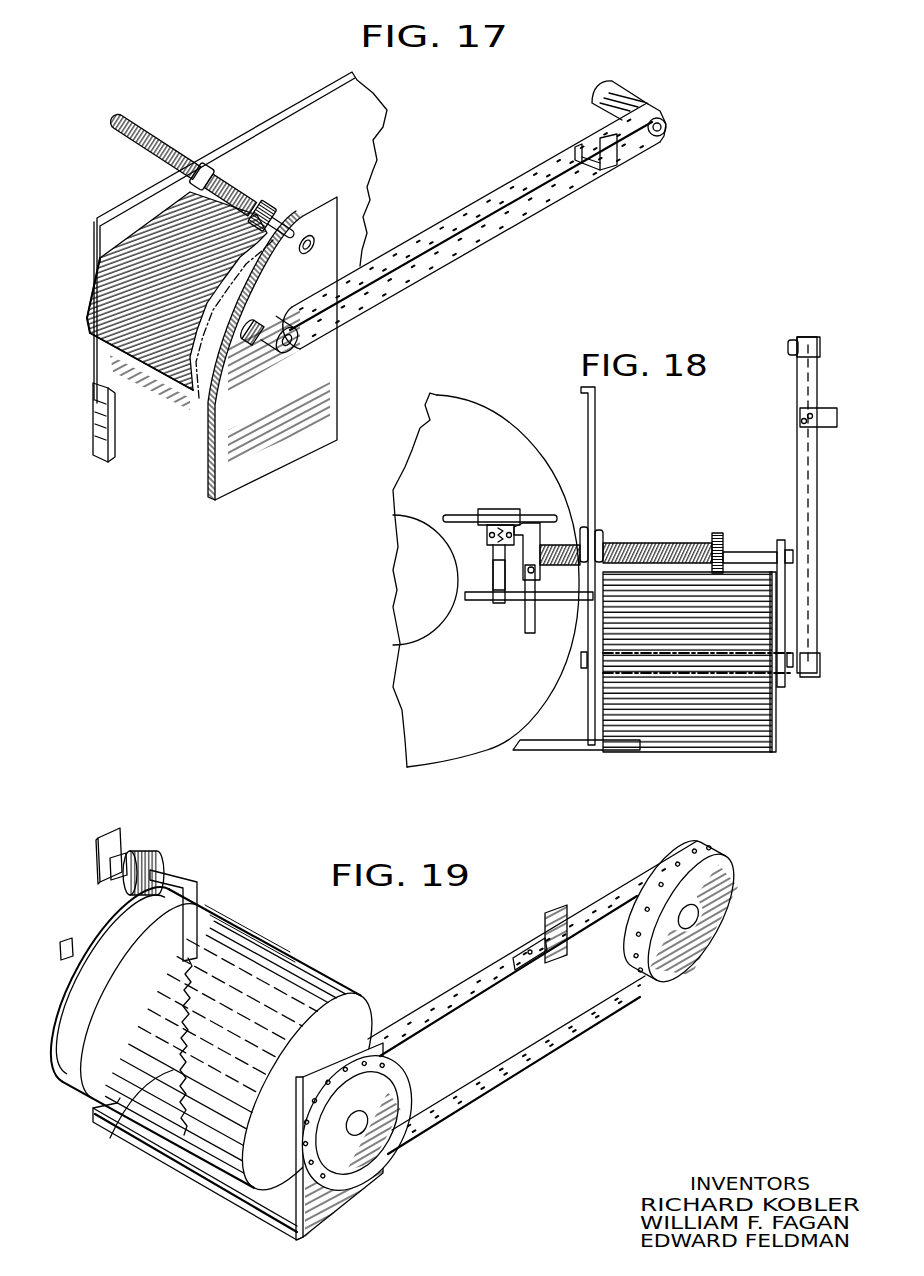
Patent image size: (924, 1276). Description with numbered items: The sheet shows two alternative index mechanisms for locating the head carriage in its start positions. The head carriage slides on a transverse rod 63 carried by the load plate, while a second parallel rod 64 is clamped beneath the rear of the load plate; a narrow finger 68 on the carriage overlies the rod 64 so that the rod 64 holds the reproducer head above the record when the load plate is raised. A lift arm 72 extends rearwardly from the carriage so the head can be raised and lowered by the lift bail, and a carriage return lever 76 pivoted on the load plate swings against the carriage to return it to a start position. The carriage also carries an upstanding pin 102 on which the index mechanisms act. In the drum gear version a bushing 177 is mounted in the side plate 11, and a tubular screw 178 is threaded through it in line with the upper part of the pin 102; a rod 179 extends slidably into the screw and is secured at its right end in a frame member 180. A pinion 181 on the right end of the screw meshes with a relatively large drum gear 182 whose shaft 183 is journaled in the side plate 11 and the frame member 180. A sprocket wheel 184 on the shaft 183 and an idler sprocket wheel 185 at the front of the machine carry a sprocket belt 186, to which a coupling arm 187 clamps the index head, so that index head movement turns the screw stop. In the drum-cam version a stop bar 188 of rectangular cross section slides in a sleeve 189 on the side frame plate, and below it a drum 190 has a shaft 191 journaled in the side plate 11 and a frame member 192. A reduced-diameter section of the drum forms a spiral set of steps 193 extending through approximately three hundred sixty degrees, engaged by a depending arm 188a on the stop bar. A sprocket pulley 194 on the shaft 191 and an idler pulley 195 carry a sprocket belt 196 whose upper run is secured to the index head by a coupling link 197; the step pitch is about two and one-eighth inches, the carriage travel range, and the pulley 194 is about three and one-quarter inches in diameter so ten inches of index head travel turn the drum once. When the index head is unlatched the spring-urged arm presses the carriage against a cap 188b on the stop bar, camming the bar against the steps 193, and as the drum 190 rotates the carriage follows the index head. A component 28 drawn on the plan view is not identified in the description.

In FIG. 17, the side plate 11 is at (312, 128).
In FIG. 18, the side plate 11 is at (597, 438).
In FIG. 18, the sector plate 28 is at (417, 703).
In FIG. 18, the transverse rod 63 is at (453, 560).
In FIG. 18, the second parallel rod 64 is at (478, 600).
In FIG. 18, the narrow finger 68 is at (500, 603).
In FIG. 18, the lift arm 72 is at (531, 633).
In FIG. 18, the carriage return lever 76 is at (487, 500).
In FIG. 18, the upstanding pin 102 is at (541, 530).
In FIG. 17, the bushing 177 is at (212, 162).
In FIG. 18, the bushing 177 is at (599, 530).
In FIG. 17, the tubular screw 178 is at (170, 134).
In FIG. 18, the tubular screw 178 is at (667, 545).
In FIG. 17, the rod 179 is at (294, 214).
In FIG. 18, the rod 179 is at (760, 553).
In FIG. 17, the frame member 180 is at (317, 427).
In FIG. 18, the frame member 180 is at (782, 687).
In FIG. 17, the pinion 181 is at (264, 199).
In FIG. 18, the pinion 181 is at (717, 533).
In FIG. 17, the drum gear 182 is at (113, 290).
In FIG. 18, the drum gear 182 is at (748, 748).
In FIG. 17, the shaft 183 is at (256, 348).
In FIG. 18, the shaft 183 is at (583, 670).
In FIG. 17, the sprocket wheel 184 is at (296, 353).
In FIG. 18, the sprocket wheel 184 is at (815, 645).
In FIG. 17, the idler sprocket wheel 185 is at (603, 100).
In FIG. 18, the idler sprocket wheel 185 is at (788, 350).
In FIG. 17, the sprocket belt 186 is at (473, 207).
In FIG. 18, the sprocket belt 186 is at (808, 470).
In FIG. 17, the coupling arm 187 is at (593, 150).
In FIG. 18, the coupling arm 187 is at (868, 392).
In FIG. 19, the stop bar 188 is at (128, 848).
In FIG. 19, the depending arm 188a is at (197, 940).
In FIG. 19, the cap 188b is at (107, 840).
In FIG. 19, the sleeve 189 is at (165, 855).
In FIG. 19, the drum 190 is at (332, 972).
In FIG. 19, the shaft 191 is at (297, 942).
In FIG. 19, the frame member 192 is at (287, 1217).
In FIG. 19, the spiral set of steps 193 is at (140, 1096).
In FIG. 19, the sprocket pulley 194 is at (360, 1153).
In FIG. 19, the idler pulley 195 is at (724, 878).
In FIG. 19, the sprocket belt 196 is at (450, 990).
In FIG. 19, the coupling link 197 is at (553, 963).